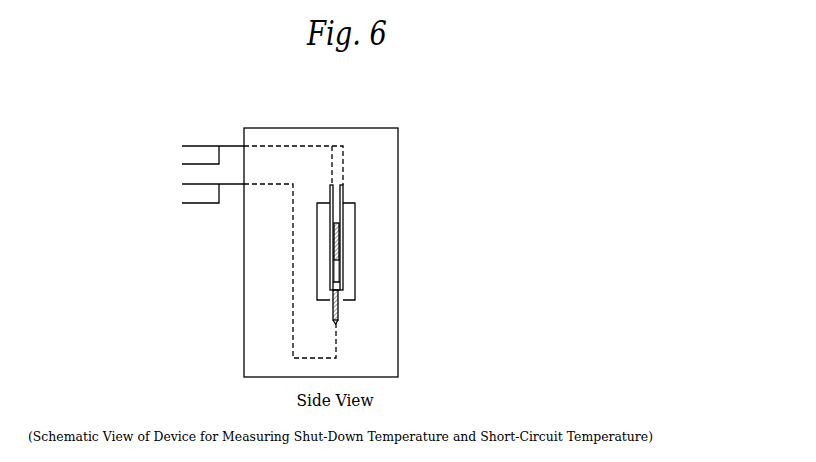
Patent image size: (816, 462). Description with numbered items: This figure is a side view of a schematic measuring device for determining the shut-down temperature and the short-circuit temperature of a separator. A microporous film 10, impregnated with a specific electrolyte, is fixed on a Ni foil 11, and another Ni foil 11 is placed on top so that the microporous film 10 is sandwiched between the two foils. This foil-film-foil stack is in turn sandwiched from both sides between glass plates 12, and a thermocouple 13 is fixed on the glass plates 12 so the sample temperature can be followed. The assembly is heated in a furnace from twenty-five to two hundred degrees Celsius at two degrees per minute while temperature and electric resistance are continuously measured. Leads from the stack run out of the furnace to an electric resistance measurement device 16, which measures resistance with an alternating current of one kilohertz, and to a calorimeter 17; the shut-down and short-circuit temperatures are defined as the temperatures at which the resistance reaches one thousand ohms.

The microporous film 10 is at (337, 242).
The Ni foil 11 is at (343, 192).
The glass plates 12 is at (356, 210).
The thermocouple 13 is at (337, 312).
The electric resistance measurement device 16 is at (200, 153).
The calorimeter 17 is at (200, 197).